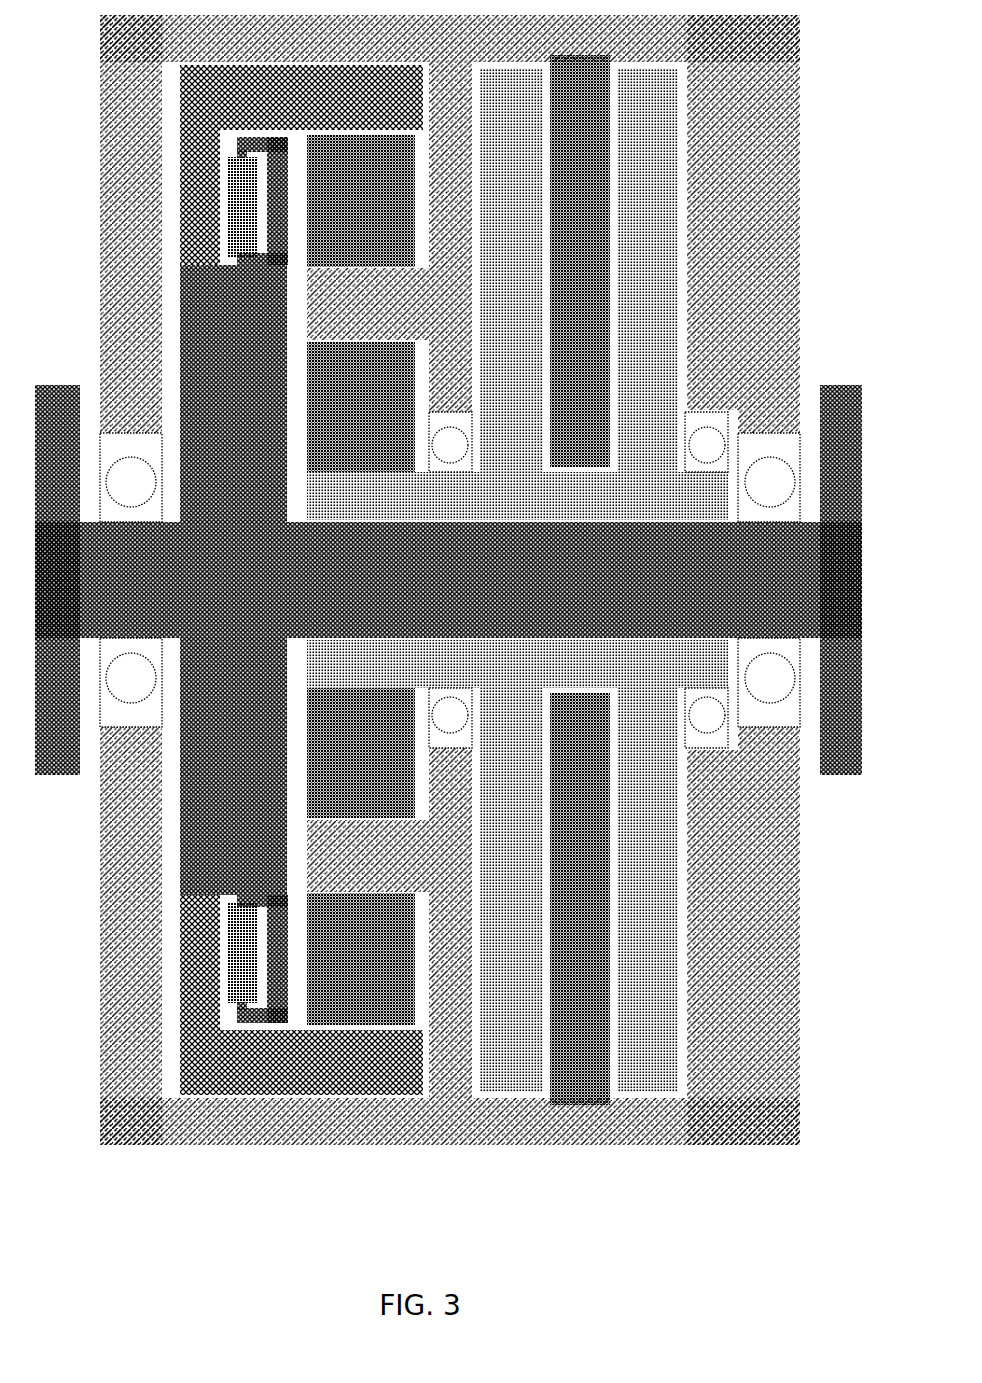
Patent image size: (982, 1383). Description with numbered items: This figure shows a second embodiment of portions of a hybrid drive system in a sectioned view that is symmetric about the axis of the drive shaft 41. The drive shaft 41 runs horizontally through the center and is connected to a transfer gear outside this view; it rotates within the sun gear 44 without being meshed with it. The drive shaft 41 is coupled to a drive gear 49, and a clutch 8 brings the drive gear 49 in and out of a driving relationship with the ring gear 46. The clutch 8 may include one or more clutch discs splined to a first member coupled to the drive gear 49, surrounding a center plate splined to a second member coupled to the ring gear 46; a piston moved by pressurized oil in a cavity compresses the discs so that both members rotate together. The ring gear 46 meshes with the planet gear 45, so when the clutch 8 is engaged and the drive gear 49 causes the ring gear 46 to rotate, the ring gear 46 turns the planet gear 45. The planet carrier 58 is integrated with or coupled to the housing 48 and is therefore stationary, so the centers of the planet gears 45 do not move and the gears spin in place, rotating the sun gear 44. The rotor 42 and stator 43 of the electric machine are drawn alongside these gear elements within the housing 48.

The clutch 8 is at (257, 580).
The drive shaft 41 is at (448, 580).
The rotor 42 is at (579, 580).
The stator 43 is at (580, 580).
The sun gear 44 is at (517, 580).
The planet gear 45 is at (361, 580).
The ring gear 46 is at (301, 580).
The housing 48 is at (450, 580).
The drive gear 49 is at (233, 580).
The planet carrier 58 is at (368, 580).